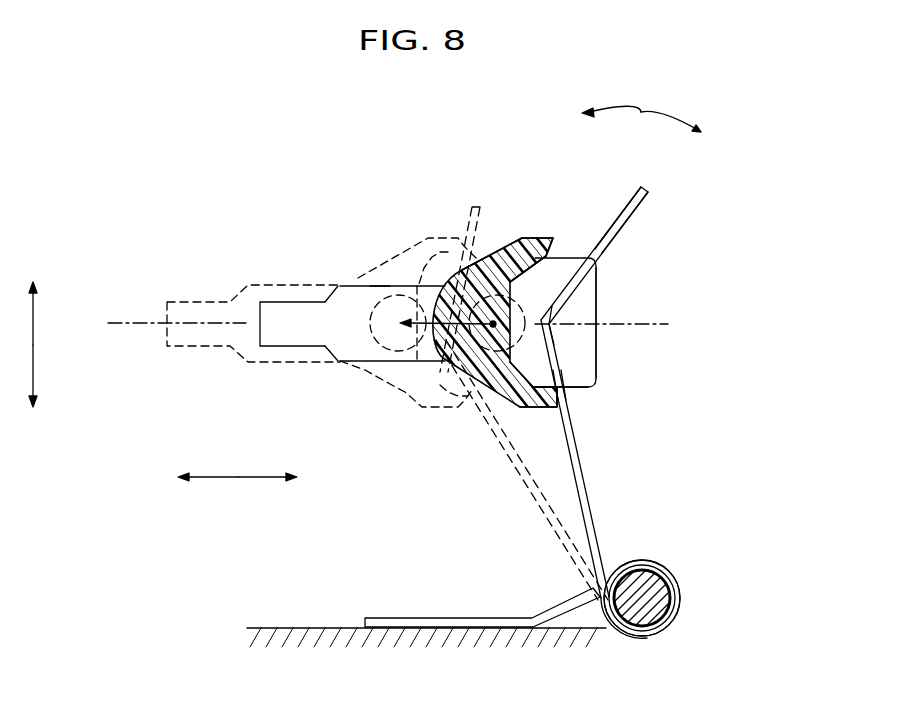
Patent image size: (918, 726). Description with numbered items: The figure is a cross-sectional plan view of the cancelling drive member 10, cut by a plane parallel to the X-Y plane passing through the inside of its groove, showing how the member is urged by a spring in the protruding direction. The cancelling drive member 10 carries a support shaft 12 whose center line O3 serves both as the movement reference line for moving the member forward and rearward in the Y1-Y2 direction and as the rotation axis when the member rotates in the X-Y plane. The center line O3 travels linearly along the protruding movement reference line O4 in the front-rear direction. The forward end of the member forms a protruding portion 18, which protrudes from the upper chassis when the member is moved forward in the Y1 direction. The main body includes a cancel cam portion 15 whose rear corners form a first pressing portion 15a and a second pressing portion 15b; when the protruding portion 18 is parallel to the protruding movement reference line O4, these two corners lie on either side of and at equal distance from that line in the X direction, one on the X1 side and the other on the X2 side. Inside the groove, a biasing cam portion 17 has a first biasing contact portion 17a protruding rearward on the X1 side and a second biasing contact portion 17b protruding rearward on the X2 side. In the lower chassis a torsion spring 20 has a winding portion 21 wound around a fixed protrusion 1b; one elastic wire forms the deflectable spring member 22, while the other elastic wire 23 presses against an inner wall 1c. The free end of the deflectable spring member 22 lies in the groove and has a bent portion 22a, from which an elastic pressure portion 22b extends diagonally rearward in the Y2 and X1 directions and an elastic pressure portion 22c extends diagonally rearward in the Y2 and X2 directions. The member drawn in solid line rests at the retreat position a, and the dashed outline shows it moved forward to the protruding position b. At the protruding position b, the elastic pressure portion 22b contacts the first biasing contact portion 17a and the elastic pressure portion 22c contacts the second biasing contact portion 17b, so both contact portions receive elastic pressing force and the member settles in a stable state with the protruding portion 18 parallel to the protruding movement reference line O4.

The cancelling drive member 10 is at (333, 281).
The protruding portion 18 is at (290, 335).
The support shaft 12 is at (440, 376).
The biasing cam portion 17 is at (505, 405).
The first biasing contact portion 17a is at (466, 410).
The second biasing contact portion 17b is at (475, 206).
The cancel cam portion 15 is at (585, 341).
The first pressing portion 15a is at (598, 275).
The second pressing portion 15b is at (587, 393).
The deflectable spring member 22 is at (583, 492).
The bent portion 22a is at (550, 322).
The elastic pressure portion on the base-portion side 22b is at (573, 388).
The elastic pressure portion on the top-end portion side 22c is at (612, 223).
The torsion spring 20 is at (691, 600).
The winding portion 21 is at (665, 570).
The fixed protrusion 1b is at (643, 608).
The inner wall 1c is at (328, 628).
The elastic wire 23 is at (460, 618).
The center line O3 is at (494, 321).
The protruding movement reference line O4 is at (369, 324).
The retreat position a is at (377, 282).
The protruding position b is at (197, 297).
The X1 direction X1 is at (33, 396).
The X2 direction X2 is at (34, 298).
The Y1 direction Y1 is at (189, 478).
The Y2 direction Y2 is at (285, 478).